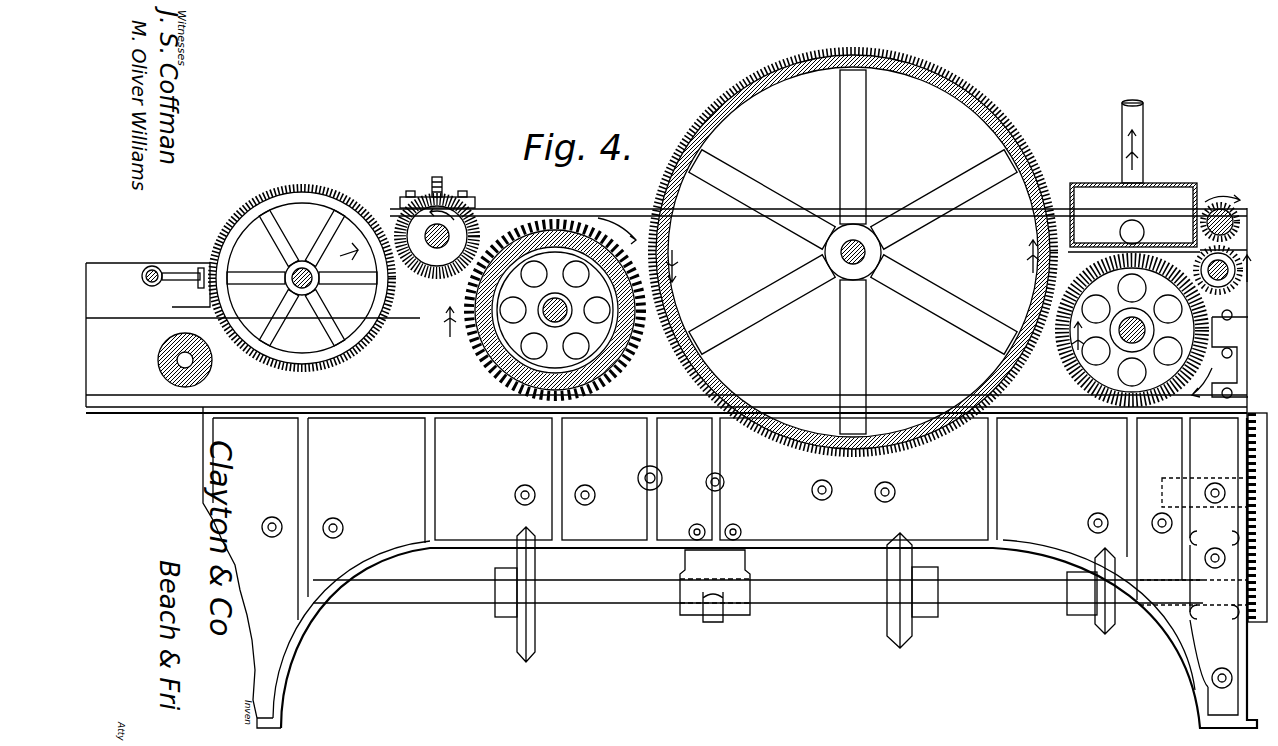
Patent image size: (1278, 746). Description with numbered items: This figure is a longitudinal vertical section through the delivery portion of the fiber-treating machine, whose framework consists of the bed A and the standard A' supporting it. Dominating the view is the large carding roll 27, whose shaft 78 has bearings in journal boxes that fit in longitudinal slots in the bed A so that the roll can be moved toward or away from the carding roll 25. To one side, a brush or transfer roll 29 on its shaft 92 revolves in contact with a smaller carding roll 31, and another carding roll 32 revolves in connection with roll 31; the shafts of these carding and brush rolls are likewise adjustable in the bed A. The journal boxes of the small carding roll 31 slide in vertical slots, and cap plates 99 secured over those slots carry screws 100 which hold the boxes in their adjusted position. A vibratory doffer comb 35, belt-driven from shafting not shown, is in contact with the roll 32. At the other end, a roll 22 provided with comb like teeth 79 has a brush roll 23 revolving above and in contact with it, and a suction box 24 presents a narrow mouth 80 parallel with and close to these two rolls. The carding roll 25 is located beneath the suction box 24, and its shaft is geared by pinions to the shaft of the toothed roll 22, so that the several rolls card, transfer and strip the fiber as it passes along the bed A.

The large carding roll 27 is at (990, 100).
The shaft of the carding roll 78 is at (868, 254).
The carding roll 32 is at (340, 196).
The smaller carding roll 31 is at (458, 222).
The cap plates 99 is at (470, 200).
The screws 100 is at (440, 179).
The vibratory doffer comb 35 is at (182, 270).
The brush or transfer roll 29 is at (483, 345).
The shaft of the brush roll 92 is at (565, 322).
The suction box 24 is at (1148, 200).
The narrow mouth 80 is at (1165, 238).
The brush roll 23 is at (1240, 222).
The comb like teeth 79 is at (1236, 252).
The roll 22 is at (1234, 282).
The carding roll 25 is at (1113, 378).
The bed A is at (667, 274).
The standard A' is at (676, 567).